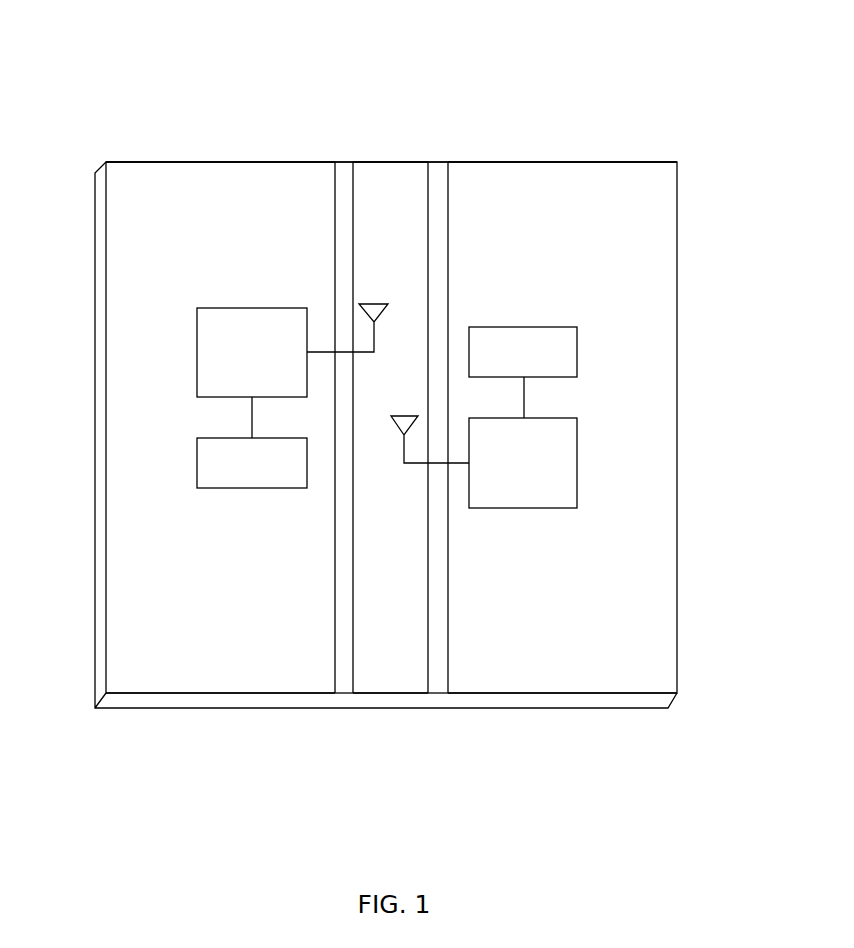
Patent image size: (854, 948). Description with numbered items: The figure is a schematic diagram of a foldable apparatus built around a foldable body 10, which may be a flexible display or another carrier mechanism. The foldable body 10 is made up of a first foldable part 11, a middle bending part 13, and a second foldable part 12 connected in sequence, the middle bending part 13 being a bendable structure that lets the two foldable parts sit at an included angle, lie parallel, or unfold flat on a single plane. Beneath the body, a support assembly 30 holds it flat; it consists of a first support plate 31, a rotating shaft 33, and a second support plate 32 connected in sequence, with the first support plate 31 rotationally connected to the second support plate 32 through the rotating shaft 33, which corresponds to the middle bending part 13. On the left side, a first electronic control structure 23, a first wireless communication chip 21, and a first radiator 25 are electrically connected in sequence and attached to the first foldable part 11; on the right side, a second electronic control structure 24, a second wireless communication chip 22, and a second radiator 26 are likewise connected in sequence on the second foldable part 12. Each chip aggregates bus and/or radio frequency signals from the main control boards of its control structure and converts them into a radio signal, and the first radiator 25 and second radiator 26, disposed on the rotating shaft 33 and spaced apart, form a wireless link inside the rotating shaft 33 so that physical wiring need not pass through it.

The foldable body 10 is at (290, 793).
The first foldable part 11 is at (213, 702).
The second foldable part 12 is at (565, 700).
The middle bending part 13 is at (392, 700).
The first wireless communication chip 21 is at (217, 347).
The second wireless communication chip 22 is at (557, 467).
The first electronic control structure 23 is at (215, 467).
The second electronic control structure 24 is at (557, 349).
The first radiator 25 is at (362, 303).
The second radiator 26 is at (418, 416).
The support assembly 30 is at (532, 78).
The first support plate 31 is at (253, 177).
The second support plate 32 is at (533, 177).
The rotating shaft 33 is at (387, 177).